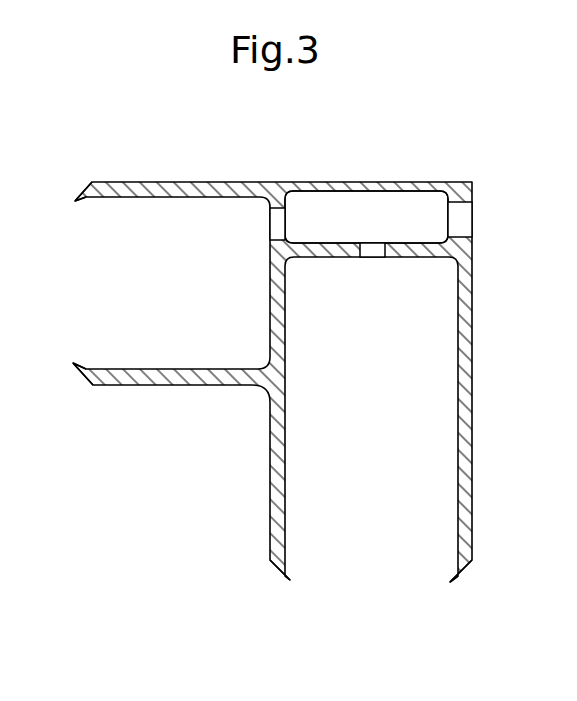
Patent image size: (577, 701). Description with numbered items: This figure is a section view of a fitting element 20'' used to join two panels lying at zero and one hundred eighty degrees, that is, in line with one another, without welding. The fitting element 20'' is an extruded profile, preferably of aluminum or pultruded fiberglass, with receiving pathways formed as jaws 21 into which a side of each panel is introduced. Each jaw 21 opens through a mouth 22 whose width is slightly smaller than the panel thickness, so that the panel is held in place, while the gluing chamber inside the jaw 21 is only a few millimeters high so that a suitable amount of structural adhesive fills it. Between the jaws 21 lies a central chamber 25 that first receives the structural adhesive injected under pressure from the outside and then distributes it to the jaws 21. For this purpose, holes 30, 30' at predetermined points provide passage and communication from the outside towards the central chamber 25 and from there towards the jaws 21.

The fitting element 20'' is at (524, 251).
The jaw 21 is at (194, 188).
The mouth 22 is at (77, 204).
The central chamber 25 is at (370, 205).
The hole 30 is at (478, 208).
The hole 30' is at (302, 256).